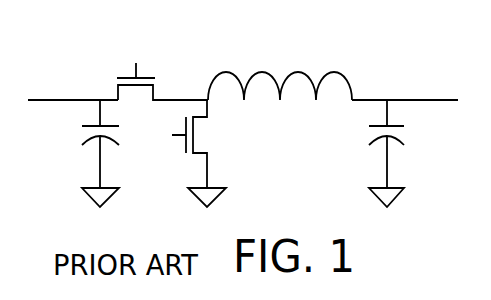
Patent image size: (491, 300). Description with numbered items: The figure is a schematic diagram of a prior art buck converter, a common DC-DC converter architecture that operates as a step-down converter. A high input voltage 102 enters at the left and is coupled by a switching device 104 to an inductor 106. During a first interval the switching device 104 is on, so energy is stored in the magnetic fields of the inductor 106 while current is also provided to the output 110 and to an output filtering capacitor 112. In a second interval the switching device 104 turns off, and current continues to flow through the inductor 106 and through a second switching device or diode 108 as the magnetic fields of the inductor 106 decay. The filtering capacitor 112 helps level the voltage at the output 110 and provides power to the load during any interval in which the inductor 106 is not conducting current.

The input voltage 102 is at (73, 90).
The switching device 104 is at (143, 73).
The inductor 106 is at (268, 72).
The second switching device or diode 108 is at (195, 140).
The output 110 is at (405, 90).
The output filtering capacitor 112 is at (368, 135).